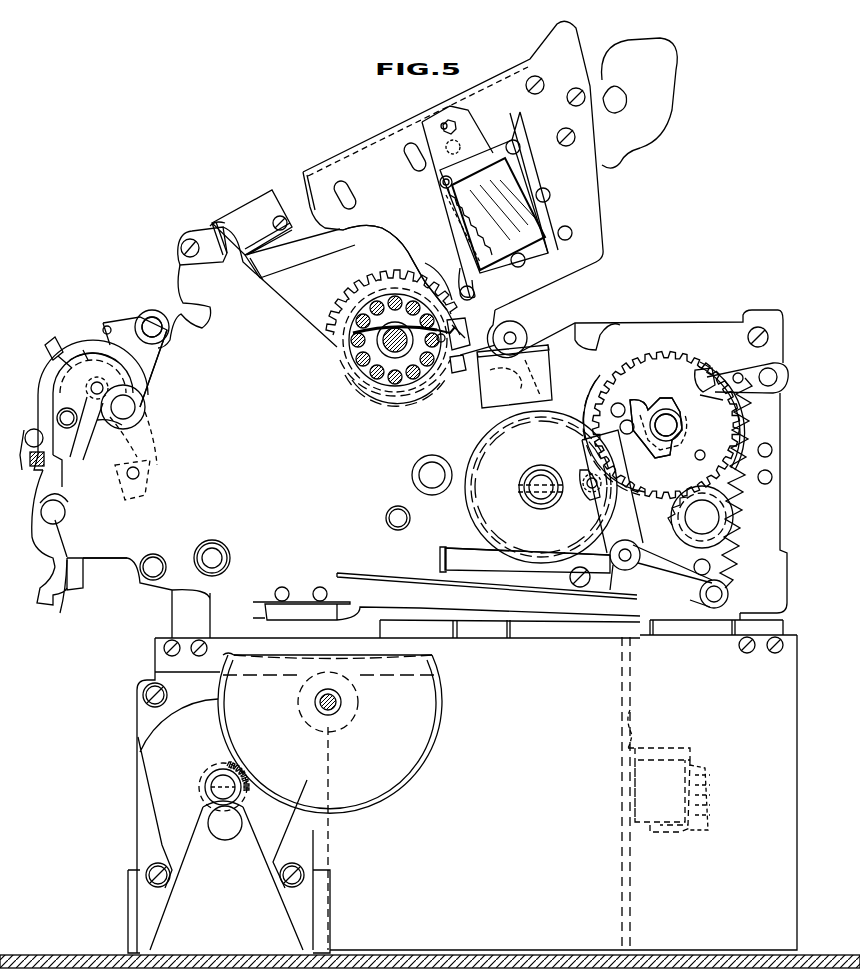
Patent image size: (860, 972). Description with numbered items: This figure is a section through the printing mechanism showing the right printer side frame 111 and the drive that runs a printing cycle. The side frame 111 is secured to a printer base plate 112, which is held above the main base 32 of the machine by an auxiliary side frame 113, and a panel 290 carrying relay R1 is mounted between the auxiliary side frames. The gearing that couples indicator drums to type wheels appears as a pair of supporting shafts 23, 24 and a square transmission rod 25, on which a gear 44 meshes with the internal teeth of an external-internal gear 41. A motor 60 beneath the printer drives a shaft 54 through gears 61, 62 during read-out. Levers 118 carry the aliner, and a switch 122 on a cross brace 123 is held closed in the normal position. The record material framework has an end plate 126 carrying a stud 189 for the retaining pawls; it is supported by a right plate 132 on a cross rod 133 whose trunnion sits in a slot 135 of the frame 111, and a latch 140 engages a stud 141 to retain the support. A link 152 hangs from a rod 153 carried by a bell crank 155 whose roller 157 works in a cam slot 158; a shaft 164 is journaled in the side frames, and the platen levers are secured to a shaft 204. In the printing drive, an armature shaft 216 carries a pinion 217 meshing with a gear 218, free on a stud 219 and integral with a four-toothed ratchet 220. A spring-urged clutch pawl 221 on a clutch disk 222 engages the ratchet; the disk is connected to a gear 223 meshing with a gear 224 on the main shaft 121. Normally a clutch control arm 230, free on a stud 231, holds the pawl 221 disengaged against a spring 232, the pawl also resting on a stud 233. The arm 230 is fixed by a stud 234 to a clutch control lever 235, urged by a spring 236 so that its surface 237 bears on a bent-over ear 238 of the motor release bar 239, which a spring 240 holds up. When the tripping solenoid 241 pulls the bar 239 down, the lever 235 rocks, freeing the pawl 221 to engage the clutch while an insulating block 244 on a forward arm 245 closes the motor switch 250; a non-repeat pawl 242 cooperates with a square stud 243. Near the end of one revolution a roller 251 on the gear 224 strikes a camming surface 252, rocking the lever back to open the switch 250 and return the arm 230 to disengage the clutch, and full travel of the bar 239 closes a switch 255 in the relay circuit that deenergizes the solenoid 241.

The supporting shaft 23 is at (385, 347).
The supporting shaft 24 is at (410, 348).
The transmission rod 25 is at (462, 327).
The main base 32 is at (95, 957).
The external-internal gear 41 is at (340, 335).
The gear 44 is at (425, 322).
The shaft 54 is at (336, 701).
The motor 60 is at (150, 770).
The gear 61 is at (212, 775).
The gear 62 is at (220, 730).
The right printer side frame 111 is at (178, 268).
The printer base plate 112 is at (180, 628).
The auxiliary side frame 113 is at (328, 842).
The lever 118 is at (308, 250).
The main shaft 121 is at (522, 487).
The switch 122 is at (268, 212).
The cross brace 123 is at (212, 228).
The end plate 126 is at (32, 432).
The right plate 132 is at (78, 580).
The cross rod 133 is at (60, 605).
The slot 135 is at (60, 500).
The latch 140 is at (47, 350).
The stud 141 is at (127, 474).
The link 152 is at (162, 345).
The rod 153 is at (152, 318).
The bell crank 155 is at (120, 322).
The roller 157 is at (97, 400).
The cam slot 158 is at (88, 350).
The shaft 164 is at (152, 556).
The stud 189 is at (36, 462).
The shaft 204 is at (222, 558).
The armature shaft 216 is at (735, 538).
The pinion 217 is at (708, 510).
The gear 218 is at (743, 483).
The stud 219 is at (662, 410).
The ratchet 220 is at (668, 410).
The clutch pawl 221 is at (657, 420).
The clutch disk 222 is at (640, 400).
The gear 223 is at (706, 372).
The gear 224 is at (472, 460).
The clutch control arm 230 is at (580, 532).
The stud 231 is at (632, 562).
The spring 232 is at (664, 425).
The stud 233 is at (616, 400).
The stud 234 is at (600, 508).
The clutch control lever 235 is at (530, 410).
The spring 236 is at (728, 590).
The surface 237 is at (408, 268).
The bent-over ear 238 is at (437, 385).
The motor release bar 239 is at (370, 160).
The spring 240 is at (438, 180).
The tripping solenoid 241 is at (552, 245).
The non-repeat pawl 242 is at (513, 332).
The square stud 243 is at (458, 374).
The block of insulating material 244 is at (505, 560).
The forward arm 245 is at (463, 552).
The motor switch 250 is at (342, 576).
The roller 251 is at (585, 478).
The camming surface 252 is at (590, 455).
The switch 255 is at (570, 347).
The panel 290 is at (628, 855).
The relay R1 is at (657, 768).